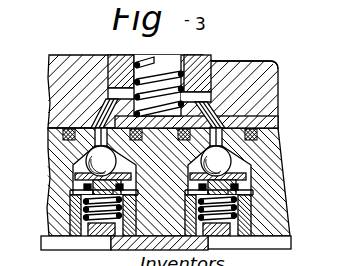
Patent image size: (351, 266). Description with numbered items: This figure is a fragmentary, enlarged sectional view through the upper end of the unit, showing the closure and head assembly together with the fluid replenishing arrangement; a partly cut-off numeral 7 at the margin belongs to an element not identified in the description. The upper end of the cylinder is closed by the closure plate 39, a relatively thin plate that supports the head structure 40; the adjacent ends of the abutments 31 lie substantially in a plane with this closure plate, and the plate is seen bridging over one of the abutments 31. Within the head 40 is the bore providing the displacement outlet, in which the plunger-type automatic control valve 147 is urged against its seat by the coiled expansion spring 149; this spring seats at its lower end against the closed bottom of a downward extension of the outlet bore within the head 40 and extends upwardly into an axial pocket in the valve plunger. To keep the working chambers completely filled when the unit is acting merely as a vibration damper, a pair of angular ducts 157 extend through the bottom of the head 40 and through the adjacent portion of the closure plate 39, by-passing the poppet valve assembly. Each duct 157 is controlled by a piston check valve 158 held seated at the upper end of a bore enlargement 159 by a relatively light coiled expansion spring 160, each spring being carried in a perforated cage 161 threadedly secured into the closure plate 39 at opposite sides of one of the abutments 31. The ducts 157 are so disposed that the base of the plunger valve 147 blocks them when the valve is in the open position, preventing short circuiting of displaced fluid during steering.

The partial numeral (cut off) 7 is at (9, 127).
The abutment 31 is at (125, 233).
The closure plate 39 is at (277, 135).
The head structure 40 is at (263, 80).
The automatic control valve 147 is at (246, 63).
The coiled expansion spring 149 is at (150, 45).
The angular duct 157 is at (87, 125).
The piston check valve 158 is at (67, 173).
The bore enlargement 159 is at (253, 176).
The coiled expansion spring 160 is at (68, 208).
The perforated cage 161 is at (90, 230).